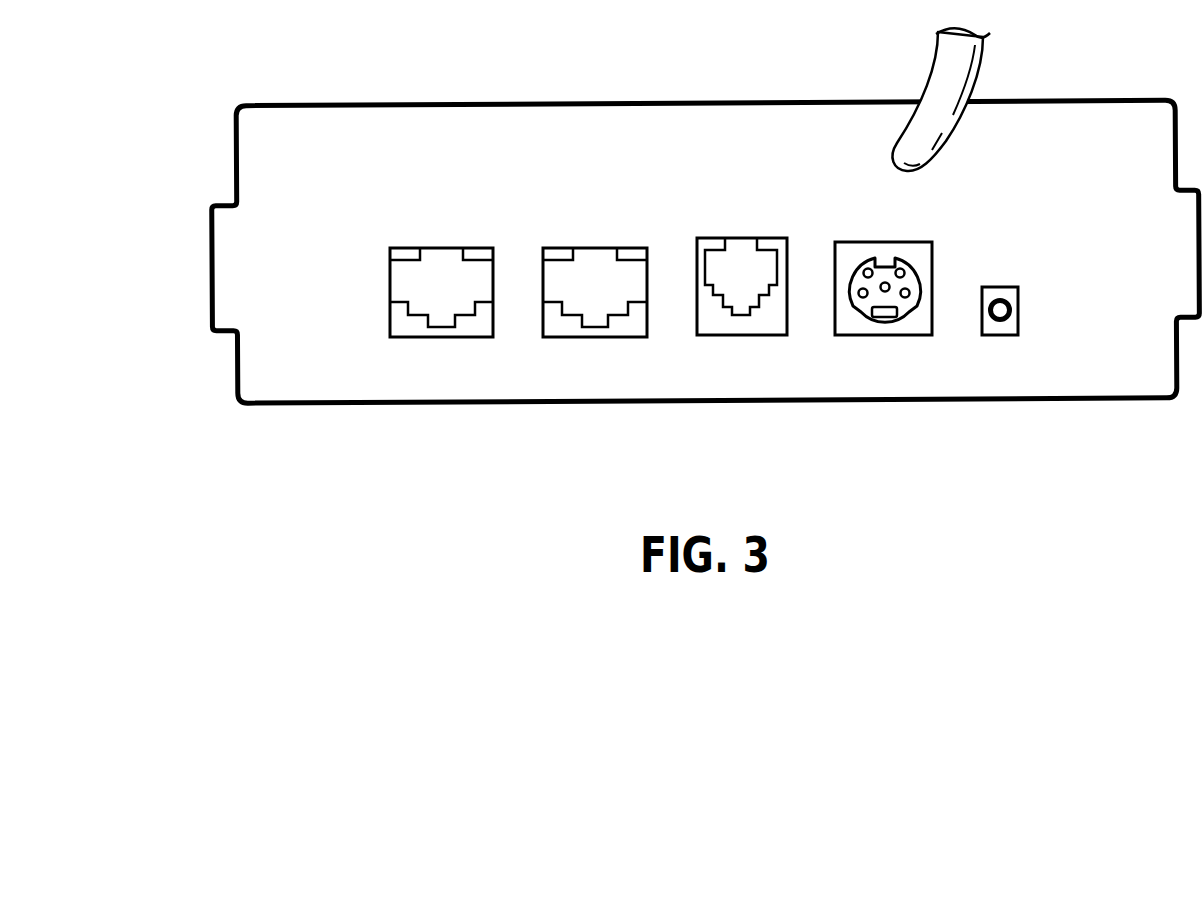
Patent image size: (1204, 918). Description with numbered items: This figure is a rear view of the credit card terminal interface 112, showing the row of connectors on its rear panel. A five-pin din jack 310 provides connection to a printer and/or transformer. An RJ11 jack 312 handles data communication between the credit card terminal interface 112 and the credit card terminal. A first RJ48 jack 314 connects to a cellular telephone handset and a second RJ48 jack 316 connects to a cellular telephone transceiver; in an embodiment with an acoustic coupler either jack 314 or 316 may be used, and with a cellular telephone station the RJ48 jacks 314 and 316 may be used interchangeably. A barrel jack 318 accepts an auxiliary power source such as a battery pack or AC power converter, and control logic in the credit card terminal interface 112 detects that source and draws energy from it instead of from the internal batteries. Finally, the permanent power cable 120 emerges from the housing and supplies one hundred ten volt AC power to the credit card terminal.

The credit card terminal interface 112 is at (236, 158).
The permanent power cable 120 is at (946, 141).
The 5-pin din jack 310 is at (859, 242).
The RJ11 jack 312 is at (712, 238).
The first RJ48 jack 314 is at (407, 248).
The second RJ48 jack 316 is at (562, 248).
The barrel jack 318 is at (1018, 296).